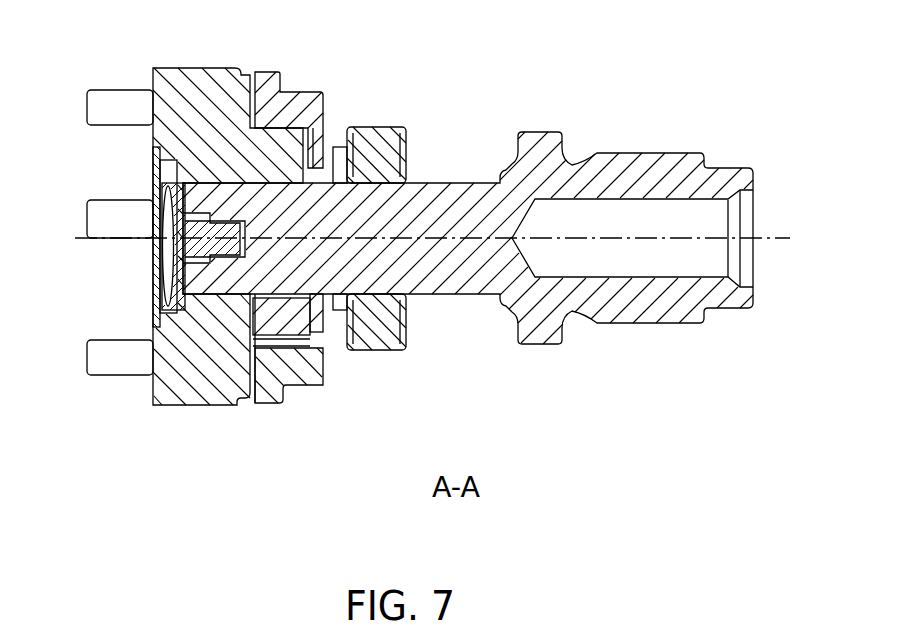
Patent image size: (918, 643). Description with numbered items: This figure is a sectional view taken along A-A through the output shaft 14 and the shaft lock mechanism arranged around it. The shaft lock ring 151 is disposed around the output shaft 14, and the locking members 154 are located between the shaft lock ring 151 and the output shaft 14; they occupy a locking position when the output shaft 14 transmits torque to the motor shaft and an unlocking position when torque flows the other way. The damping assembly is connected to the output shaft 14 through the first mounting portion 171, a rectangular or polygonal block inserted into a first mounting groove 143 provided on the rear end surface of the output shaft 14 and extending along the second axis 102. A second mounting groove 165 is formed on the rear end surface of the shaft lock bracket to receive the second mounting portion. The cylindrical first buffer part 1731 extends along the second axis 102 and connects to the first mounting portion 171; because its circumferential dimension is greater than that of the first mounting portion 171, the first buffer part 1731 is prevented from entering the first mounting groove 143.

The output shaft 14 is at (472, 180).
The second axis 102 is at (465, 241).
The first mounting groove 143 is at (223, 240).
The shaft lock ring 151 is at (293, 107).
The locking members 154 is at (277, 323).
The second mounting groove 165 is at (155, 173).
The first mounting portion 171 is at (223, 240).
The first buffer part 1731 is at (185, 248).